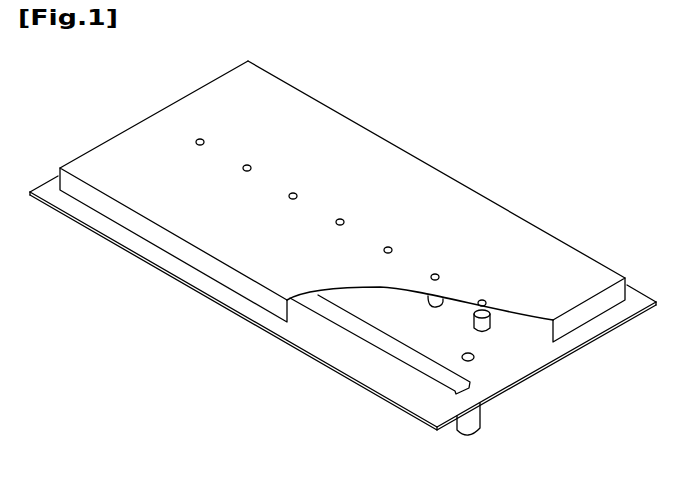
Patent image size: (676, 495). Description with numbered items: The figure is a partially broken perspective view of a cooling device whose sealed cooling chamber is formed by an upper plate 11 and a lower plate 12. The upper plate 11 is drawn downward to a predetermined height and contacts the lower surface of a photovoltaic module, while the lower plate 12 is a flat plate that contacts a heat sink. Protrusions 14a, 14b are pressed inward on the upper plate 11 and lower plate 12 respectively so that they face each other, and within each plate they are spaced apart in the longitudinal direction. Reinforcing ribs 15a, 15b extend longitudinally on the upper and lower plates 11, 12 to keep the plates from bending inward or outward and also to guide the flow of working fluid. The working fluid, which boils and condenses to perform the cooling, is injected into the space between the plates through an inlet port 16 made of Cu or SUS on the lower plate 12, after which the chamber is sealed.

The upper plate 11 is at (523, 220).
The lower plate 12 is at (497, 394).
The protrusion 14a is at (488, 308).
The protrusion 14b is at (492, 324).
The reinforcing rib 15a is at (322, 297).
The reinforcing rib 15b is at (440, 377).
The inlet port 16 is at (471, 438).